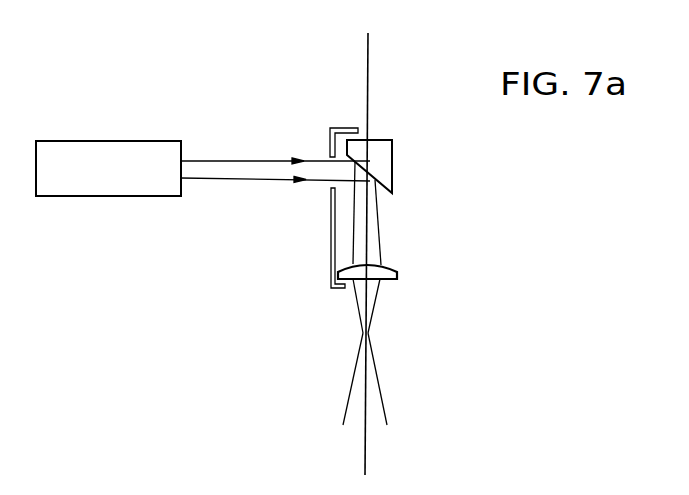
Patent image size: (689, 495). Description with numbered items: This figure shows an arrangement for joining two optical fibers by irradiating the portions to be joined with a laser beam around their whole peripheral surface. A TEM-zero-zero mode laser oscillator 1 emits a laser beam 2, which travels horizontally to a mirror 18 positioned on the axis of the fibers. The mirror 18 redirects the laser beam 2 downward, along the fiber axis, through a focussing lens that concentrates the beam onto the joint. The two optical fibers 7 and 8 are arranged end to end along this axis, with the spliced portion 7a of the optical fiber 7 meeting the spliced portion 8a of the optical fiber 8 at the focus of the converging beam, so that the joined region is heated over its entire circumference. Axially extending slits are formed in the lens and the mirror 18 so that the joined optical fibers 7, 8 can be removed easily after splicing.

The laser oscillator 1 is at (119, 197).
The laser beam 2 is at (262, 172).
The optical fiber 7 is at (367, 80).
The spliced portion 7a is at (375, 302).
The optical fiber 8 is at (365, 455).
The spliced portion 8a is at (353, 372).
The mirror 18 is at (392, 168).